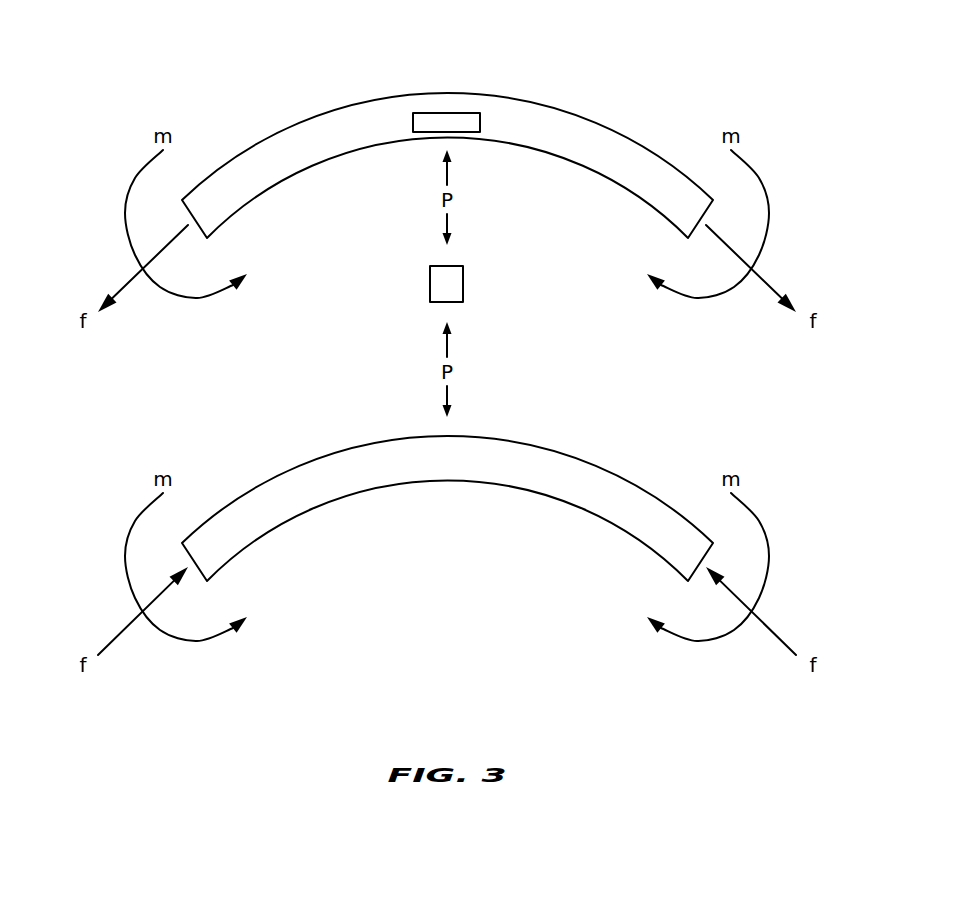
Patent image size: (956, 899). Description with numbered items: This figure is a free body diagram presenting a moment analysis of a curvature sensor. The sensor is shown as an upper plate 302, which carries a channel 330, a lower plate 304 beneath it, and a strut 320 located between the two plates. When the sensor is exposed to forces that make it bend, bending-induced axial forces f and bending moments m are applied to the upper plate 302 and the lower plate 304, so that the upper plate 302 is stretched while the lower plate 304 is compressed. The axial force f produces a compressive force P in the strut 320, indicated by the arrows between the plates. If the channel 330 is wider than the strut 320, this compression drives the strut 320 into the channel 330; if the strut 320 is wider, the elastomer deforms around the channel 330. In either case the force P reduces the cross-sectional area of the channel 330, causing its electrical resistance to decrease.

The upper plate 302 is at (532, 127).
The lower plate 304 is at (513, 453).
The strut 320 is at (447, 283).
The channel 330 is at (430, 113).